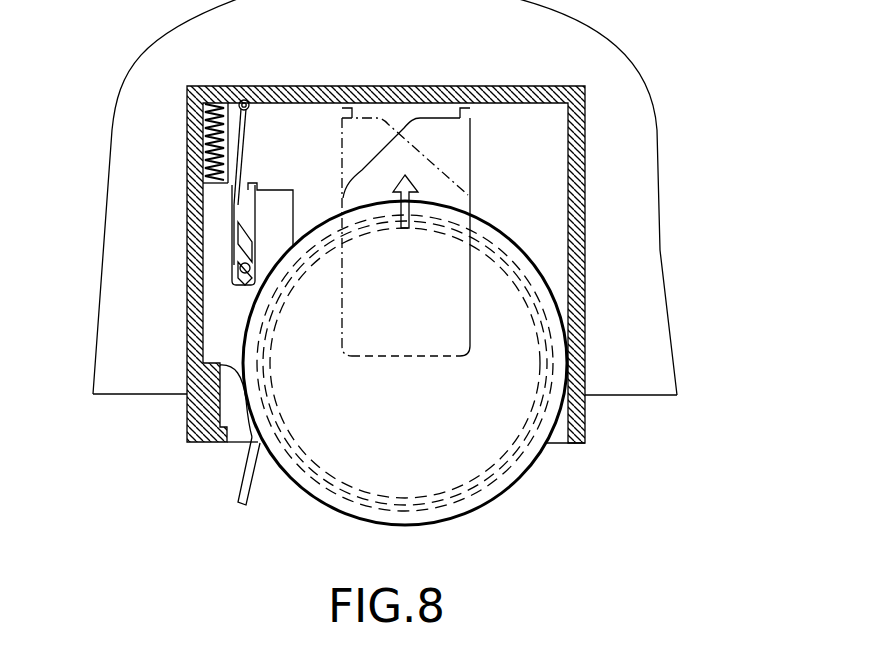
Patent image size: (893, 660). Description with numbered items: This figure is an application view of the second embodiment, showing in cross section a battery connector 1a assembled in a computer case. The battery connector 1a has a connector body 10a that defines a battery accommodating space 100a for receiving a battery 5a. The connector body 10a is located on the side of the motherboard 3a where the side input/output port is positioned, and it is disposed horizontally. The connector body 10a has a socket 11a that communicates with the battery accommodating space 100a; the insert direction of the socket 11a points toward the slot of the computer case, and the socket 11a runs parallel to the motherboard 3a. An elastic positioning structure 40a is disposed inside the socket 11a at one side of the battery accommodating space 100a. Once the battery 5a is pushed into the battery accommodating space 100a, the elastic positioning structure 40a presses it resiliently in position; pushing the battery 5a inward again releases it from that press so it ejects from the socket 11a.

The battery connector 1a is at (390, 259).
The motherboard 3a is at (637, 218).
The battery 5a is at (342, 505).
The connector body 10a is at (583, 272).
The socket 11a is at (557, 443).
The elastic positioning structure 40a is at (207, 252).
The battery accommodating space 100a is at (543, 153).